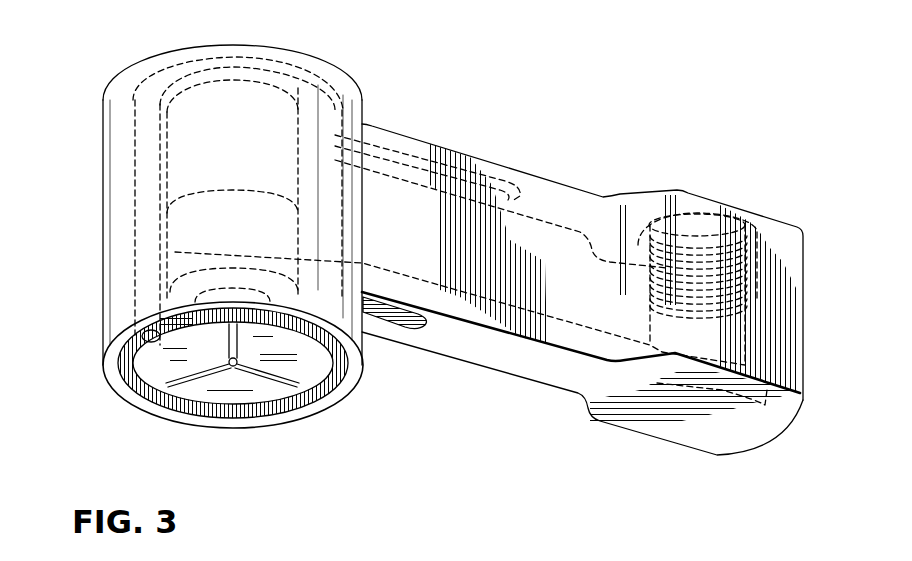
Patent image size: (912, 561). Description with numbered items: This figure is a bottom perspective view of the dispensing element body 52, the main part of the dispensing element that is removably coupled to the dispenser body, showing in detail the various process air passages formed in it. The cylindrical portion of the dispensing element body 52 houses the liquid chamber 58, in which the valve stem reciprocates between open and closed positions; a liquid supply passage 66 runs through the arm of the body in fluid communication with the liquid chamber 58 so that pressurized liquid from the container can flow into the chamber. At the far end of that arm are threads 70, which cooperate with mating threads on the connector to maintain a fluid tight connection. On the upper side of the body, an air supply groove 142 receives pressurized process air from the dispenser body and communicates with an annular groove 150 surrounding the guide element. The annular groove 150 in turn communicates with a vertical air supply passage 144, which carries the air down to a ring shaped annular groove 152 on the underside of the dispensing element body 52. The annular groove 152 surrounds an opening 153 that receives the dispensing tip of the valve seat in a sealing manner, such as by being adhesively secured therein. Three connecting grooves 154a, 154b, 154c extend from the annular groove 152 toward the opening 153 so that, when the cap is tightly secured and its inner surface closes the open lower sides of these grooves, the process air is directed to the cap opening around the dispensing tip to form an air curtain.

The dispensing element body 52 is at (603, 197).
The liquid chamber 58 is at (175, 252).
The liquid supply passage 66 is at (567, 357).
The threads 70 is at (757, 303).
The air supply groove 142 is at (512, 183).
The vertical air supply passage 144 is at (133, 187).
The annular groove 150 is at (312, 68).
The annular groove 152 is at (323, 392).
The opening 153 is at (234, 366).
The connecting groove 154a is at (226, 362).
The connecting groove 154b is at (190, 388).
The connecting groove 154c is at (264, 384).